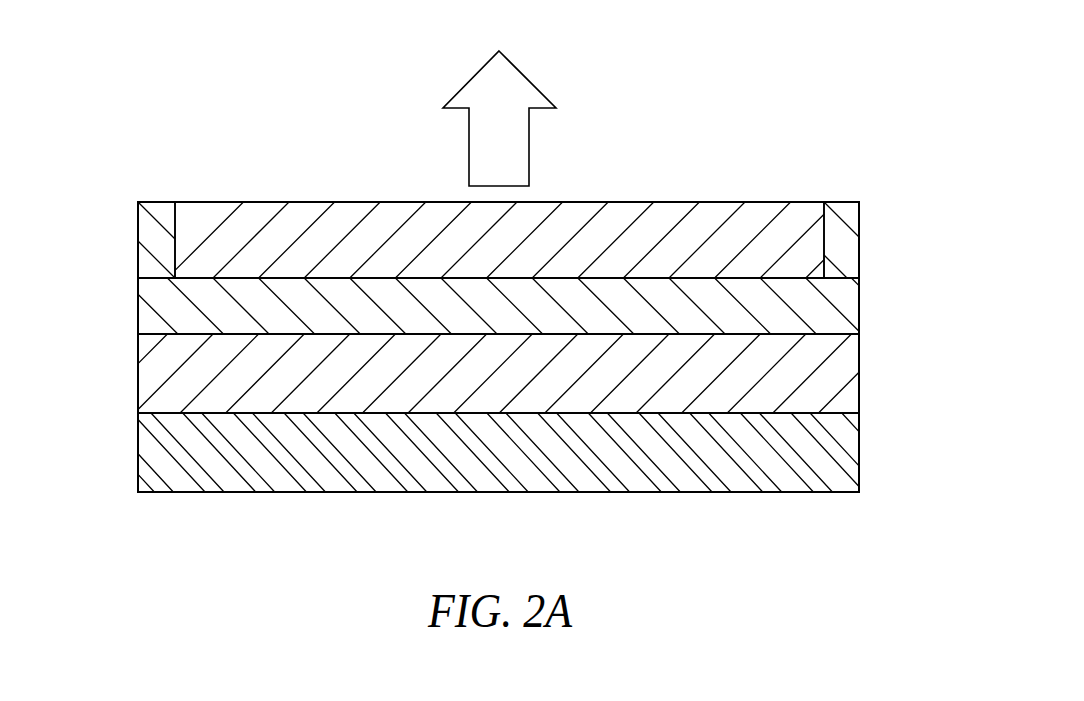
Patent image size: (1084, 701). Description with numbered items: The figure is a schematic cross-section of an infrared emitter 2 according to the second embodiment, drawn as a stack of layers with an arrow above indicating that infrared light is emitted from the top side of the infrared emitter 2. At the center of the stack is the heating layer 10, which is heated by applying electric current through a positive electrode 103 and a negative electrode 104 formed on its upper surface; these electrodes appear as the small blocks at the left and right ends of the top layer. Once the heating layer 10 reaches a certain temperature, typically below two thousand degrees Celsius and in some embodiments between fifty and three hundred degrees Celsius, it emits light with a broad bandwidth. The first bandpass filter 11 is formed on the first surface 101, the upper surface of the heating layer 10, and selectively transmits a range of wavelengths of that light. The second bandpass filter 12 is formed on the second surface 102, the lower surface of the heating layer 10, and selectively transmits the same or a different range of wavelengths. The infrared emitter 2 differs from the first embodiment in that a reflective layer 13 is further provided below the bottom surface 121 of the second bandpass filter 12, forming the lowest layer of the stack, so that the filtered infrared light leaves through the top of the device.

The infrared emitter 2 is at (851, 80).
The heating layer 10 is at (146, 313).
The first bandpass filter 11 is at (230, 212).
The second bandpass filter 12 is at (146, 383).
The reflective layer 13 is at (146, 449).
The first surface 101 is at (703, 277).
The second surface 102 is at (672, 335).
The positive electrode 103 is at (146, 238).
The negative electrode 104 is at (852, 240).
The bottom surface 121 is at (258, 413).